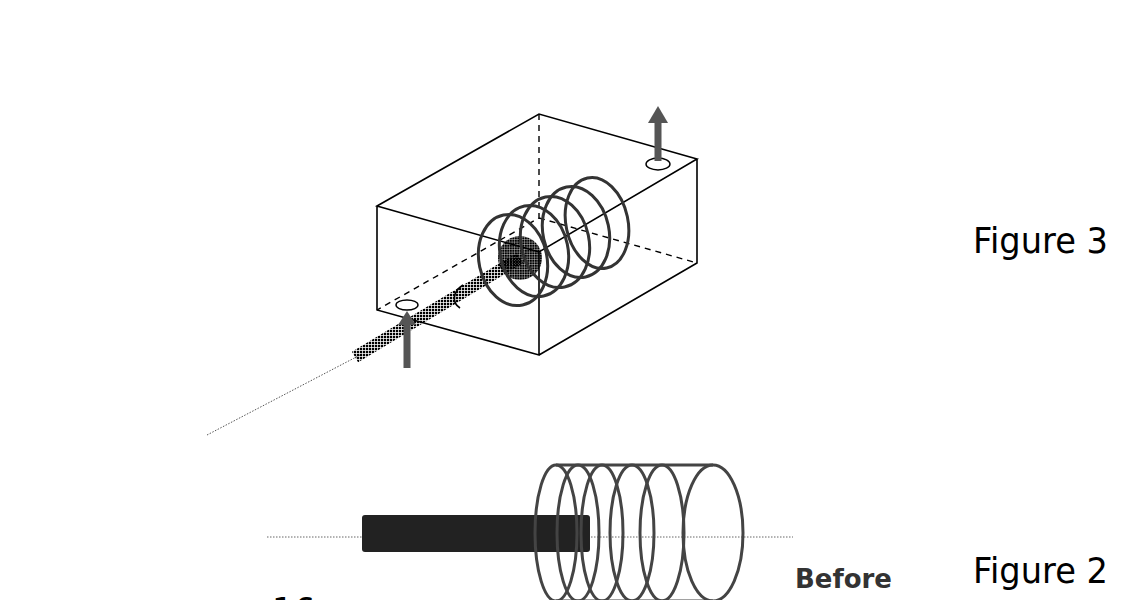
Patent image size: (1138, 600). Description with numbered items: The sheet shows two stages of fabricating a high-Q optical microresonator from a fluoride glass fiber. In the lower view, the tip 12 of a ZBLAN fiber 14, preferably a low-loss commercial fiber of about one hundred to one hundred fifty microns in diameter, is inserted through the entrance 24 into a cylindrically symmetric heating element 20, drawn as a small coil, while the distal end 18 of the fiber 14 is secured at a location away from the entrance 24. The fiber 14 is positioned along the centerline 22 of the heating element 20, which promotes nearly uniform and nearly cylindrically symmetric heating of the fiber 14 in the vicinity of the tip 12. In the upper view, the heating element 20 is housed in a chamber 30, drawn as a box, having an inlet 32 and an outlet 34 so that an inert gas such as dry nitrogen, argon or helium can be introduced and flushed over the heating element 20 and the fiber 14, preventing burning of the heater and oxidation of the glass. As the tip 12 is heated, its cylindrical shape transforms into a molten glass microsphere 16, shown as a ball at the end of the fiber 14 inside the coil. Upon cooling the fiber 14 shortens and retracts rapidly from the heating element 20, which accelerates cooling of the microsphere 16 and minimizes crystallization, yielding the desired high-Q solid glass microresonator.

In FIG. 2, the tip 12 is at (590, 518).
In FIG. 3, the ZBLAN fiber 14 is at (447, 312).
In FIG. 2, the ZBLAN fiber 14 is at (463, 515).
In FIG. 3, the microsphere 16 is at (493, 255).
In FIG. 3, the distal end 18 is at (355, 352).
In FIG. 2, the distal end 18 is at (353, 517).
In FIG. 3, the heating element 20 is at (632, 223).
In FIG. 2, the heating element 20 is at (745, 494).
In FIG. 3, the centerline 22 is at (252, 402).
In FIG. 2, the centerline 22 is at (257, 537).
In FIG. 2, the entrance 24 is at (535, 578).
In FIG. 3, the chamber 30 is at (483, 147).
In FIG. 3, the inlet 32 is at (393, 300).
In FIG. 3, the outlet 34 is at (660, 163).